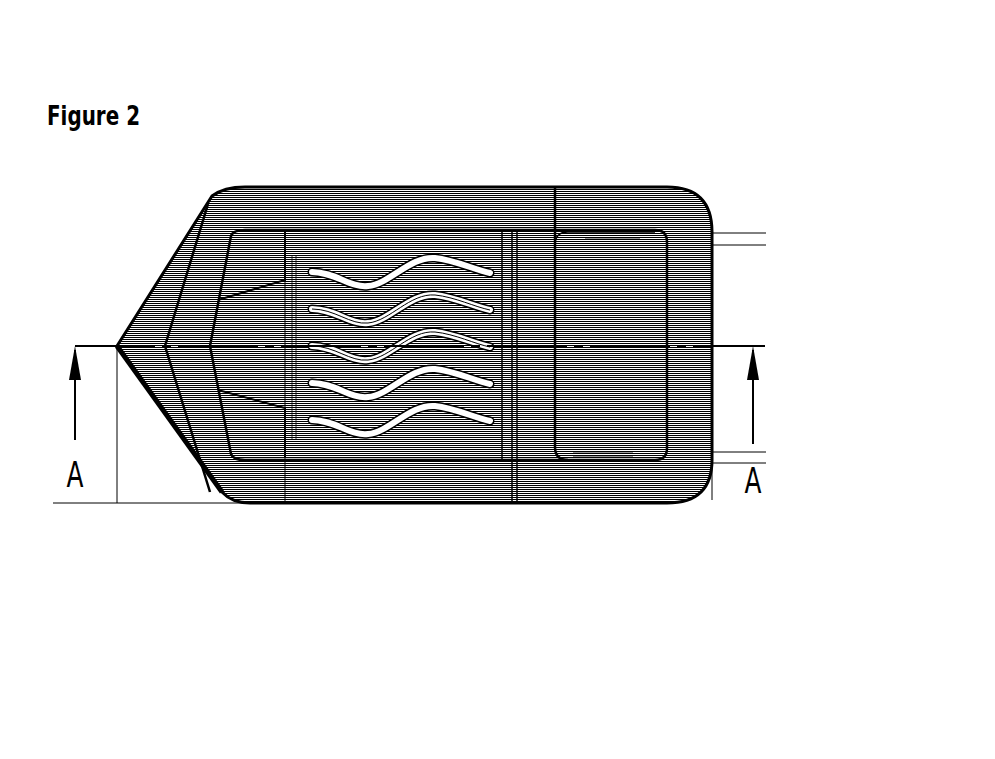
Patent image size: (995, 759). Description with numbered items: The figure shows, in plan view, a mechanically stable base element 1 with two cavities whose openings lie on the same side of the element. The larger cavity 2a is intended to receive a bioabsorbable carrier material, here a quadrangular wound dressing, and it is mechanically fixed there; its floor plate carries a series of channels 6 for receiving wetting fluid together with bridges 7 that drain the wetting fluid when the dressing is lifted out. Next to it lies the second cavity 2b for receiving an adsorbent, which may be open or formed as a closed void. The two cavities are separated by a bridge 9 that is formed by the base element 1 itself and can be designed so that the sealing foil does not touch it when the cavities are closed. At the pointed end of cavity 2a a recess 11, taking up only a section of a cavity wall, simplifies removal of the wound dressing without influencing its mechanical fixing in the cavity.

The base element 1 is at (355, 493).
The cavity 2a is at (357, 257).
The cavity 2b is at (605, 315).
The channels 6 is at (363, 355).
The bridges 7 is at (430, 322).
The bridge 9 is at (538, 320).
The recess 11 is at (243, 360).